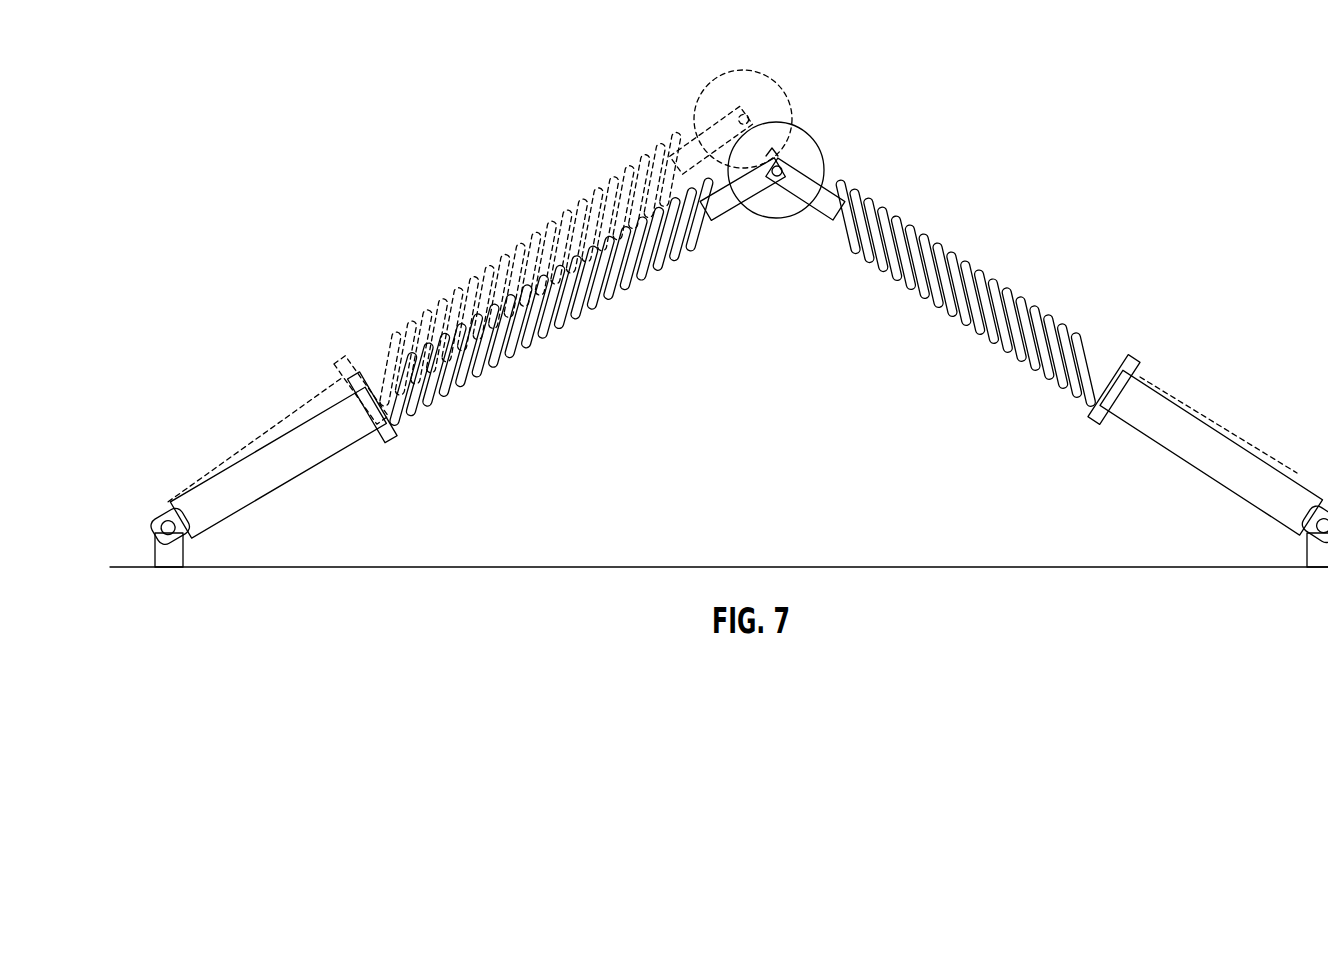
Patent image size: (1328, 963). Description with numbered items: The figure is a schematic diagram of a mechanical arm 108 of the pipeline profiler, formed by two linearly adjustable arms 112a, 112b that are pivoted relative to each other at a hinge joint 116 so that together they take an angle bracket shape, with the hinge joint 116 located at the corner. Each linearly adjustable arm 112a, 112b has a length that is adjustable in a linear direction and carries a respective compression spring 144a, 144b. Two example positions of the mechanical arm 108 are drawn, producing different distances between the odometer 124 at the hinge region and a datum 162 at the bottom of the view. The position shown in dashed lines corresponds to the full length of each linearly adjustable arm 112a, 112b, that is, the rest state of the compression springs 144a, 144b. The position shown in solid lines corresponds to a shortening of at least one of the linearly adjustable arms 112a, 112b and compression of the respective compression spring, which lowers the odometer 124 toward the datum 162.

The mechanical arm 108 is at (1181, 395).
The linearly adjustable arm 112a is at (305, 453).
The linearly adjustable arm 112b is at (1198, 455).
The hinge joint 116 is at (784, 163).
The odometer 124 is at (763, 70).
The compression spring 144a is at (547, 223).
The compression spring 144b is at (953, 237).
The datum 162 is at (741, 565).